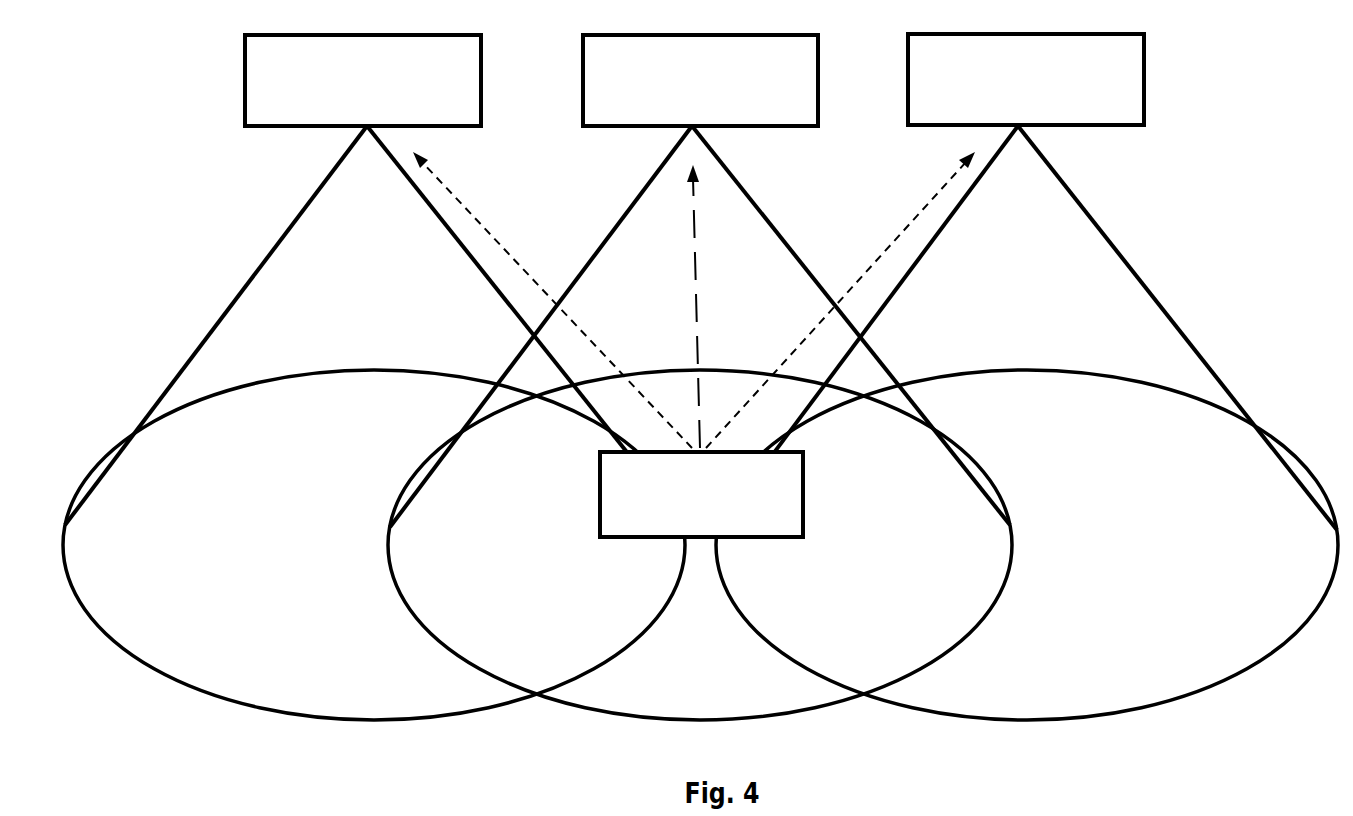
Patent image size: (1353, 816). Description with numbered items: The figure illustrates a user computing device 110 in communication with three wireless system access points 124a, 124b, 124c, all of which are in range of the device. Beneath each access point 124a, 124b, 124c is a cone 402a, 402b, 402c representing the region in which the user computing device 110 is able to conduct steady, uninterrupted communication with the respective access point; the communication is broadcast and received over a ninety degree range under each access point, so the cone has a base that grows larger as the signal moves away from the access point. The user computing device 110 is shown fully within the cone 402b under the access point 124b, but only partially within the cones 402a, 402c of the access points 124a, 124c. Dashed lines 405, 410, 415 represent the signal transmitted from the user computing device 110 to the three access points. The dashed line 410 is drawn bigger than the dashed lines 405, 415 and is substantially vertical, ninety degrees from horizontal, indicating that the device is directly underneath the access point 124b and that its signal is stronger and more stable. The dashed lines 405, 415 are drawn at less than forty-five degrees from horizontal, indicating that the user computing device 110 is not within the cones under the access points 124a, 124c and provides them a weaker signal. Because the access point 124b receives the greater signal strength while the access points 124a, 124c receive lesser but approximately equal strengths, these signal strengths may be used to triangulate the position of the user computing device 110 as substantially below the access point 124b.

The wireless system access point 124a is at (363, 80).
The wireless system access point 124b is at (700, 80).
The wireless system access point 124c is at (1026, 79).
The user computing device 110 is at (701, 494).
The cone 402a is at (374, 423).
The cone 402b is at (700, 423).
The cone 402c is at (1027, 423).
The dashed line 405 is at (552, 300).
The dashed line 410 is at (712, 306).
The dashed line 415 is at (840, 300).